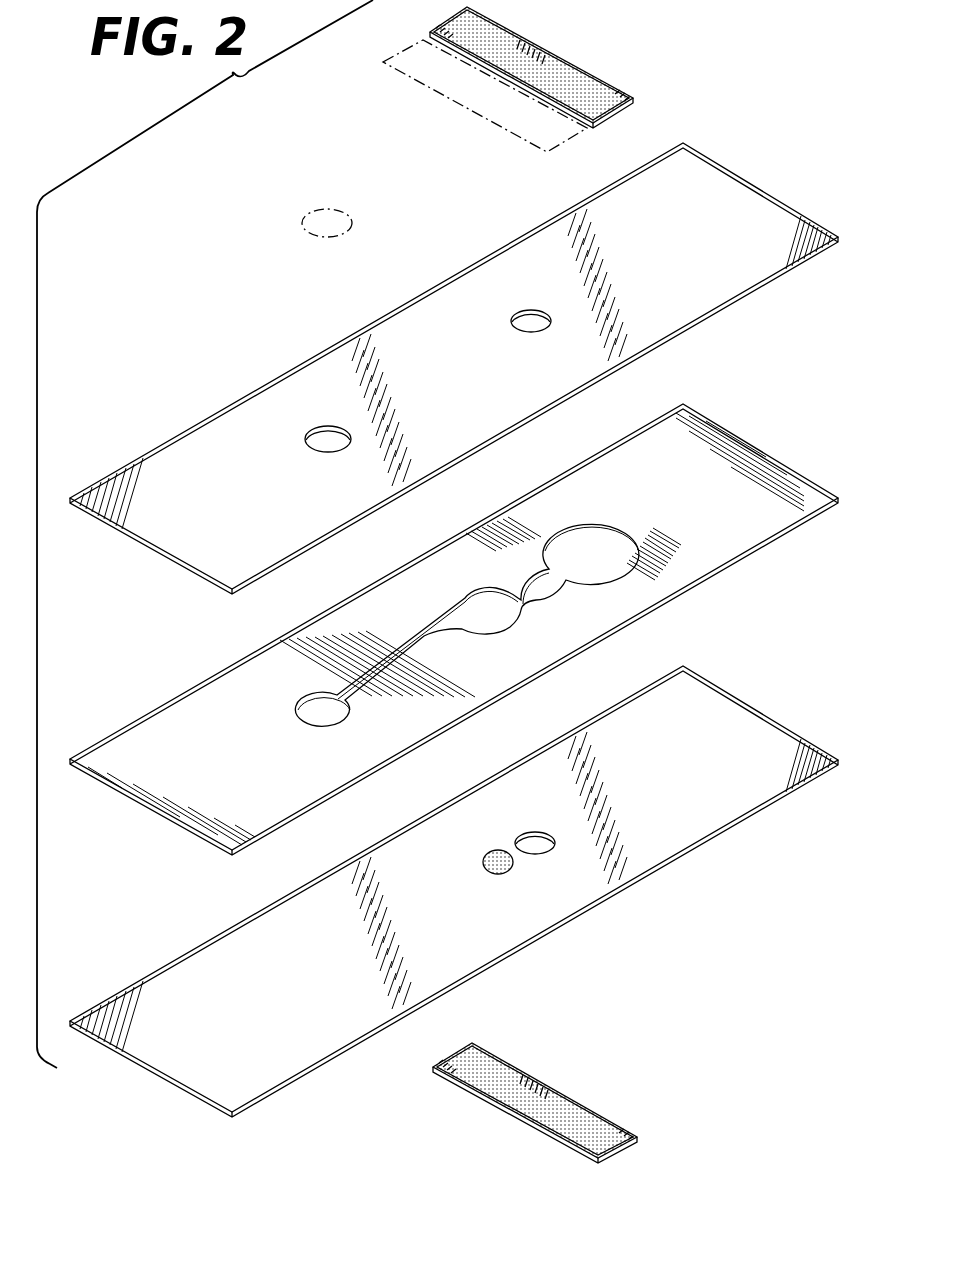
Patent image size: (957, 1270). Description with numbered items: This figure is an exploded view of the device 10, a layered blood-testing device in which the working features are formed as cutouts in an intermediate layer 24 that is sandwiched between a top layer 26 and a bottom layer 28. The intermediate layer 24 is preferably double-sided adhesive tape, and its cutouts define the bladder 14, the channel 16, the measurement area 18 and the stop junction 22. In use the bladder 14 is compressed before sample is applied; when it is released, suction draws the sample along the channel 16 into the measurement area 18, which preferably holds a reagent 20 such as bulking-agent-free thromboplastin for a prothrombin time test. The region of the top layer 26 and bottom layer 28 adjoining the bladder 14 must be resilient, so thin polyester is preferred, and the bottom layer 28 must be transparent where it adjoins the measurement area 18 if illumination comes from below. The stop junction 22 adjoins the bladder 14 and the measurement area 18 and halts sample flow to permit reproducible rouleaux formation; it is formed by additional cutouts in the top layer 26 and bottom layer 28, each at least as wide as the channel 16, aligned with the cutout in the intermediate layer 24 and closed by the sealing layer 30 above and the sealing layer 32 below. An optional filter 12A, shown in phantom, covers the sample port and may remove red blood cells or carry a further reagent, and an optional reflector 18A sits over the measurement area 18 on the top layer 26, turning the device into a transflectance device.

The device 10 is at (187, 322).
The filter 12A is at (311, 210).
The bladder 14 is at (531, 581).
The channel 16 is at (467, 585).
The measurement area 18 is at (467, 585).
The reflector 18A is at (460, 108).
The reagent 20 is at (488, 855).
The stop junction 22 is at (467, 585).
The intermediate layer 24 is at (187, 737).
The top layer 26 is at (200, 479).
The bottom layer 28 is at (197, 1005).
The sealing layer 30 is at (565, 78).
The sealing layer 32 is at (567, 1110).